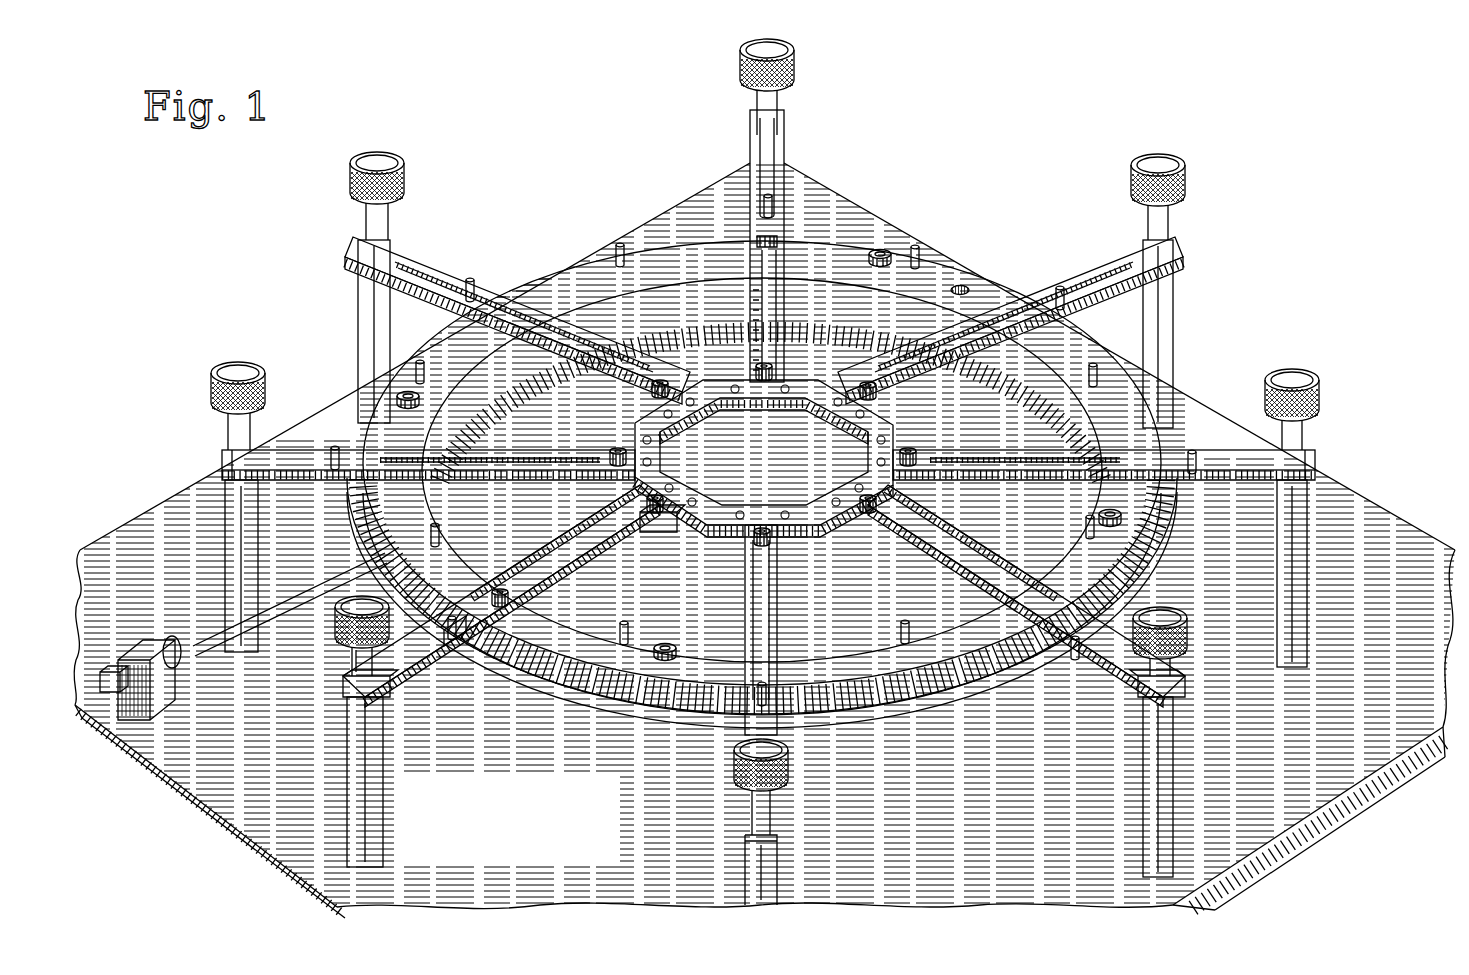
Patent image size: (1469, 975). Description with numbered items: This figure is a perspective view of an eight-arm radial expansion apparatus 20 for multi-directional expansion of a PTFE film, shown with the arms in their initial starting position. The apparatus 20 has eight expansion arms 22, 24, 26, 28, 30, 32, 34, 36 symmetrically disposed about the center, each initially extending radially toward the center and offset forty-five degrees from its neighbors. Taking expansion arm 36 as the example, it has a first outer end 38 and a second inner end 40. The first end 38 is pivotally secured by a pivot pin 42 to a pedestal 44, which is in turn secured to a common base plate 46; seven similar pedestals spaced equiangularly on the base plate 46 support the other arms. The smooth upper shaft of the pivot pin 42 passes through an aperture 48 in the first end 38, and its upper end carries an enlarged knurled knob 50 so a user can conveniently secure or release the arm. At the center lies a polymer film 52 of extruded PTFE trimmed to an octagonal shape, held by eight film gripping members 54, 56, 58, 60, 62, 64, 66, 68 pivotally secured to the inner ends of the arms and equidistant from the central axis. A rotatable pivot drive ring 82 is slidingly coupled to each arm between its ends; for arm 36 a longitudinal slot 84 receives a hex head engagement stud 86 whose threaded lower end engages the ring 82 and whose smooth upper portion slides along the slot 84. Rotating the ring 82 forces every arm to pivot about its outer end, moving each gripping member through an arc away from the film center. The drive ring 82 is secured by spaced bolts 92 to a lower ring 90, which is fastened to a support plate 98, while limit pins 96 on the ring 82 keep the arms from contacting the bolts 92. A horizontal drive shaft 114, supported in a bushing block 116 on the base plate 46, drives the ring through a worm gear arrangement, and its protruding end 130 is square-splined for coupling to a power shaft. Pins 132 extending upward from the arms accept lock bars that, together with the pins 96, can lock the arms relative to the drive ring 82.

The expansion apparatus 20 is at (1275, 240).
The expansion arm 22 is at (746, 598).
The expansion arm 24 is at (1123, 690).
The expansion arm 26 is at (1241, 480).
The expansion arm 28 is at (1095, 268).
The expansion arm 30 is at (786, 165).
The expansion arm 32 is at (426, 262).
The expansion arm 34 is at (304, 472).
The expansion arm 36 is at (450, 650).
The first outer end 38 is at (388, 698).
The second inner end 40 is at (640, 526).
The pivot pin 42 is at (352, 650).
The pedestal 44 is at (347, 776).
The base plate 46 is at (494, 820).
The aperture 48 is at (345, 686).
The knurled knob 50 is at (335, 622).
The polymer film 52 is at (766, 470).
The film gripping member 54 is at (726, 532).
The film gripping member 56 is at (898, 504).
The film gripping member 58 is at (900, 440).
The film gripping member 60 is at (844, 396).
The film gripping member 62 is at (734, 382).
The film gripping member 64 is at (684, 384).
The film gripping member 66 is at (636, 436).
The film gripping member 68 is at (690, 532).
The pivot drive ring 82 is at (962, 288).
The slot 84 is at (530, 582).
The hex head engagement stud 86 is at (498, 594).
The lower ring 90 is at (880, 712).
The bolts 92 is at (883, 250).
The limit pins 96 is at (620, 244).
The support plate 98 is at (1010, 422).
The horizontal drive shaft 114 is at (193, 648).
The bushing block 116 is at (138, 640).
The splined end 130 is at (110, 672).
The pins 132 is at (472, 280).